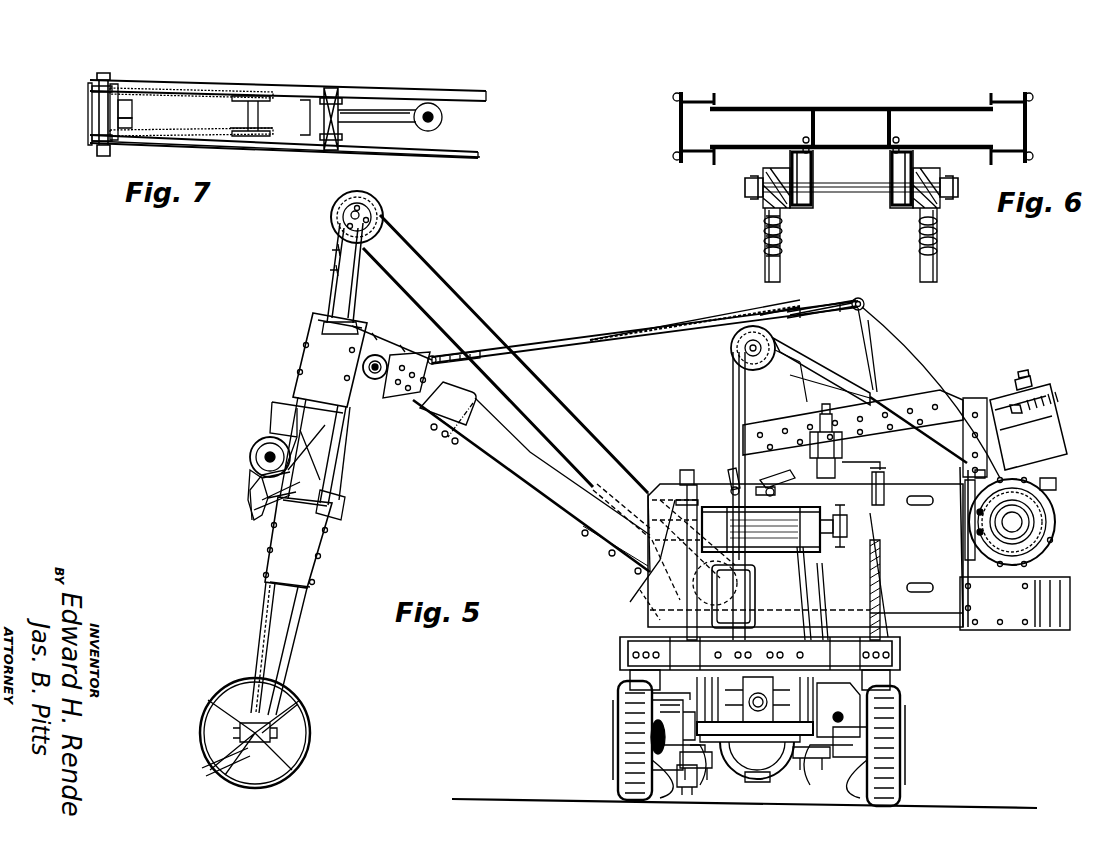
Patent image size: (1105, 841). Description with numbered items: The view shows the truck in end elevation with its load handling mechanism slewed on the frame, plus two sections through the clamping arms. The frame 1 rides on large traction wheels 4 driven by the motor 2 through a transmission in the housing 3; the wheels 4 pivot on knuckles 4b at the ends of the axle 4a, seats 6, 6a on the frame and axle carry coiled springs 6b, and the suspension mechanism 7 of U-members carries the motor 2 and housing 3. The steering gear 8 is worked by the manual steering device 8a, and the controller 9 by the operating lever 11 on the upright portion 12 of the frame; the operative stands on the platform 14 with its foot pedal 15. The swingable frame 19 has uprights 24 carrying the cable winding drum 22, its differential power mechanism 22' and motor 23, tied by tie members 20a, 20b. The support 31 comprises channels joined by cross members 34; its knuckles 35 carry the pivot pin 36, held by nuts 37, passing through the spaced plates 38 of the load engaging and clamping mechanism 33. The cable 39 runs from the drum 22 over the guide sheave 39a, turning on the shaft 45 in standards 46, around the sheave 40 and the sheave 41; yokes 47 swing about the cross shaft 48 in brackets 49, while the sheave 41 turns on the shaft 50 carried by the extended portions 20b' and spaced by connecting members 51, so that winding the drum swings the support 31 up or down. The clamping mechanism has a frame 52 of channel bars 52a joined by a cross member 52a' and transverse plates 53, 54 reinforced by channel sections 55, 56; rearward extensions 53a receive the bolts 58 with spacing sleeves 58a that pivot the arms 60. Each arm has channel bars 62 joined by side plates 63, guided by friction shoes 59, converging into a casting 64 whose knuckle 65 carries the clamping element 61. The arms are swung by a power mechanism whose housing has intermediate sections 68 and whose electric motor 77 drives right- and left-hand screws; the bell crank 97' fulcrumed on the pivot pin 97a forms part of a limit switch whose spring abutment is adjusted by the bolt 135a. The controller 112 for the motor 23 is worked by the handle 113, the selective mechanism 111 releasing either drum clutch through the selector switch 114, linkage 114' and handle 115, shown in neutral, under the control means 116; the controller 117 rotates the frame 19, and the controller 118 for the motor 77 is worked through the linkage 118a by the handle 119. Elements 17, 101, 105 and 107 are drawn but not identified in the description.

In FIG. 5, the frame 1 is at (900, 660).
In FIG. 5, the motor 2 is at (788, 660).
In FIG. 5, the housing 3 is at (768, 782).
In FIG. 5, the wheels 4 is at (617, 776).
In FIG. 5, the axle 4a is at (800, 770).
In FIG. 5, the knuckles 4b is at (668, 780).
In FIG. 5, the seat 6 is at (652, 730).
In FIG. 5, the seat 6a is at (652, 700).
In FIG. 5, the coiled springs 6b is at (652, 714).
In FIG. 5, the suspension mechanism 7 is at (724, 778).
In FIG. 5, the steering gear 8 is at (687, 785).
In FIG. 5, the manual steering device 8a is at (679, 536).
In FIG. 5, the controller 9 is at (780, 552).
In FIG. 5, the operating lever 11 is at (843, 537).
In FIG. 5, the upright portion 12 is at (666, 474).
In FIG. 5, the platform 14 is at (755, 694).
In FIG. 5, the foot pedal 15 is at (828, 663).
In FIG. 5, the gear box 17 is at (757, 590).
In FIG. 5, the frame 19 is at (1011, 610).
In FIG. 5, the tie members 20a is at (880, 450).
In FIG. 5, the tie members 20b is at (884, 407).
In FIG. 5, the extended portions 20b' is at (931, 392).
In FIG. 5, the cable winding drum 22 is at (1026, 518).
In FIG. 5, the power mechanism 22' is at (1061, 479).
In FIG. 5, the motor 23 is at (1066, 428).
In FIG. 5, the uprights 24 is at (950, 490).
In FIG. 6, the support 31 is at (782, 274).
In FIG. 5, the support 31 is at (516, 462).
In FIG. 5, the load engaging and clamping mechanism 33 is at (341, 488).
In FIG. 5, the cross members 34 is at (447, 446).
In FIG. 6, the knuckles 35 is at (772, 168).
In FIG. 5, the knuckles 35 is at (378, 380).
In FIG. 6, the pivot pin 36 is at (834, 194).
In FIG. 5, the pivot pin 36 is at (378, 390).
In FIG. 6, the nuts 37 is at (752, 198).
In FIG. 5, the nuts 37 is at (372, 397).
In FIG. 6, the spaced plates 38 is at (800, 162).
In FIG. 5, the cable 39 is at (680, 332).
In FIG. 5, the guide sheave 39a is at (730, 342).
In FIG. 5, the sheave 40 is at (508, 352).
In FIG. 5, the sheave 41 is at (778, 308).
In FIG. 5, the shaft 45 is at (740, 350).
In FIG. 5, the standards 46 is at (732, 391).
In FIG. 5, the yokes 47 is at (474, 350).
In FIG. 5, the cross shaft 48 is at (434, 356).
In FIG. 6, the brackets 49 is at (764, 238).
In FIG. 5, the brackets 49 is at (398, 348).
In FIG. 5, the shaft 50 is at (864, 302).
In FIG. 5, the connecting members 51 is at (818, 306).
In FIG. 5, the frame 52 is at (351, 278).
In FIG. 6, the channel bars 52a is at (851, 132).
In FIG. 5, the channel bars 52a is at (331, 390).
In FIG. 5, the cross member 52a' is at (318, 246).
In FIG. 7, the transverse plate 53 is at (125, 96).
In FIG. 6, the transverse plate 53 is at (778, 100).
In FIG. 7, the extensions 53a is at (88, 96).
In FIG. 7, the transverse plate 54 is at (136, 127).
In FIG. 6, the transverse plate 54 is at (758, 145).
In FIG. 7, the channel section 55 is at (250, 114).
In FIG. 7, the channel section 56 is at (136, 116).
In FIG. 7, the bolt 58 is at (97, 76).
In FIG. 7, the spacing sleeve 58a is at (110, 110).
In FIG. 7, the friction shoes 59 is at (92, 89).
In FIG. 7, the arms 60 is at (302, 153).
In FIG. 6, the arms 60 is at (854, 129).
In FIG. 5, the arms 60 is at (298, 543).
In FIG. 5, the load clamping elements 61 is at (310, 733).
In FIG. 7, the channel bars 62 is at (318, 80).
In FIG. 6, the channel bars 62 is at (690, 98).
In FIG. 5, the channel bars 62 is at (334, 457).
In FIG. 6, the side plates 63 is at (678, 108).
In FIG. 5, the side plates 63 is at (305, 378).
In FIG. 5, the casting 64 is at (268, 697).
In FIG. 5, the knuckle 65 is at (210, 765).
In FIG. 5, the intermediate sections 68 is at (256, 500).
In FIG. 5, the electric motor 77 is at (252, 456).
In FIG. 7, the pivot pin 97a is at (336, 96).
In FIG. 7, the bell crank 97' is at (377, 94).
In FIG. 5, the cable 101 is at (598, 404).
In FIG. 5, the pulley axle 105 is at (350, 215).
In FIG. 5, the pulley 107 is at (378, 208).
In FIG. 5, the selective mechanism 111 is at (892, 590).
In FIG. 5, the controller 112 is at (862, 716).
In FIG. 5, the operating handle 113 is at (786, 474).
In FIG. 5, the selector switch 114 is at (896, 682).
In FIG. 5, the linkage 114' is at (893, 575).
In FIG. 5, the handle 115 is at (886, 474).
In FIG. 5, the control means 116 is at (873, 454).
In FIG. 5, the controller 117 is at (848, 442).
In FIG. 5, the controller 118 is at (630, 678).
In FIG. 5, the linkage 118a is at (632, 610).
In FIG. 5, the operating handle 119 is at (730, 470).
In FIG. 7, the bolt 135a is at (442, 114).